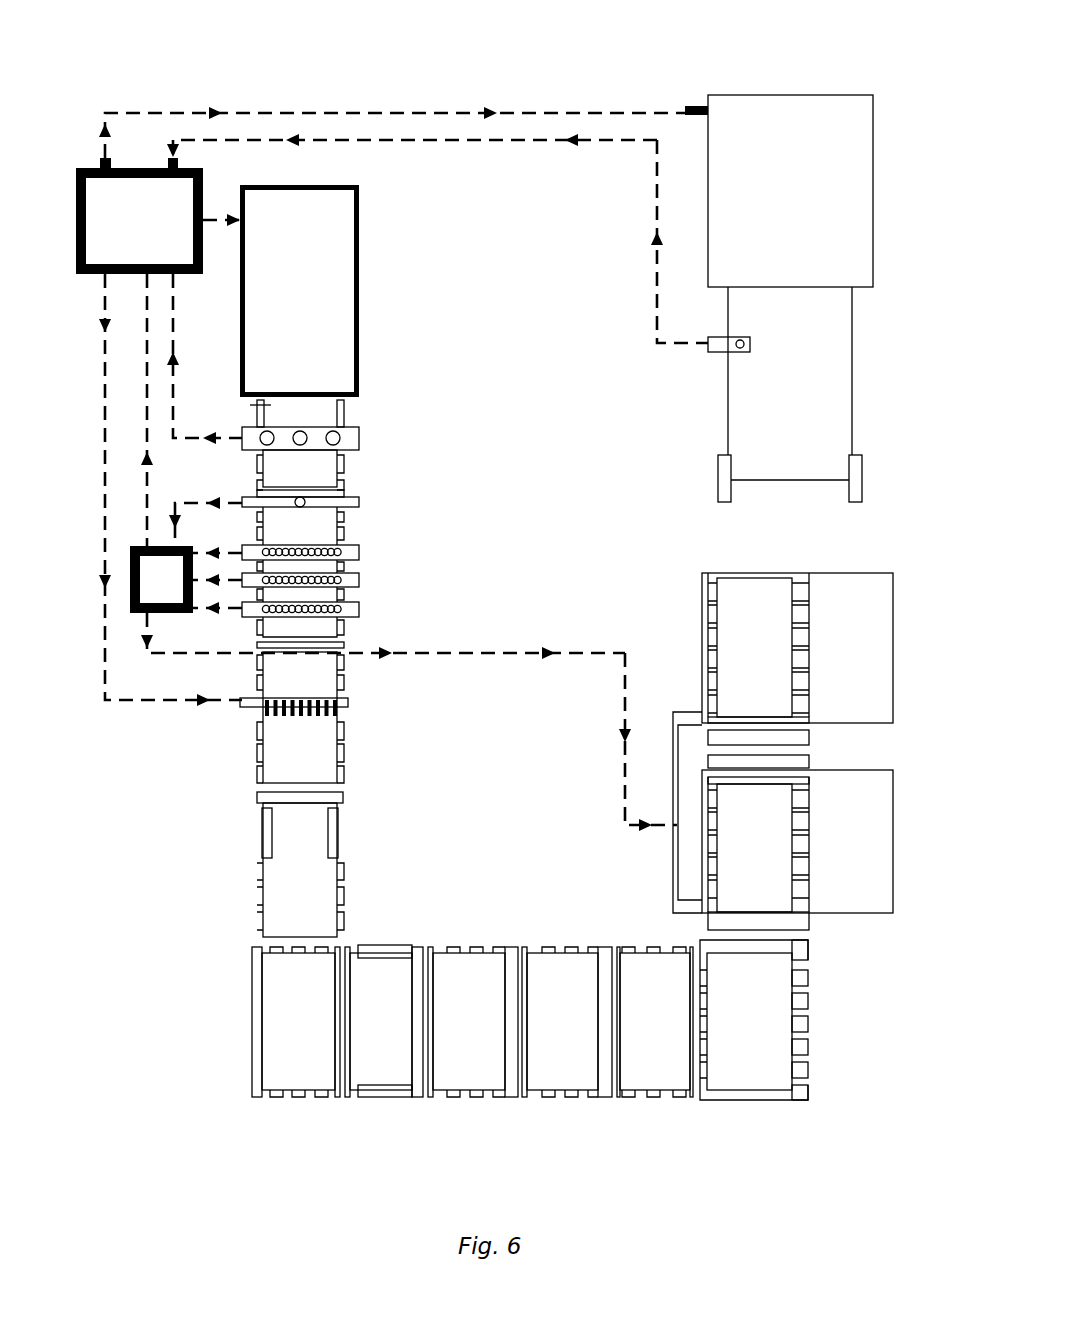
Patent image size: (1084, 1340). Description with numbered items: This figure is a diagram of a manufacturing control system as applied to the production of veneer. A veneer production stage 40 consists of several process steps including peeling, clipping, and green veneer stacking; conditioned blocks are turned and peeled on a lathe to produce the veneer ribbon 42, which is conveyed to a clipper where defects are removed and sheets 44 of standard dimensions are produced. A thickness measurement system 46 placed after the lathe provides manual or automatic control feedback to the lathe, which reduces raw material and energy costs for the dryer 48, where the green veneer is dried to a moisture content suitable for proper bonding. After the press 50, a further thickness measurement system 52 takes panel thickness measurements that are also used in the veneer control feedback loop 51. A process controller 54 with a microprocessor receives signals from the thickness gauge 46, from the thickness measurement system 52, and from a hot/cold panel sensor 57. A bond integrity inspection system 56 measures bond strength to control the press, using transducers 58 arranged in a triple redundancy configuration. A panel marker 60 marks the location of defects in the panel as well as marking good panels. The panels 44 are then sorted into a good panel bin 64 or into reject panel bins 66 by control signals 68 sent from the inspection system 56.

The veneer production stage 40 is at (556, 62).
The veneer ribbon 42 is at (830, 405).
The sheets 44 is at (273, 408).
The thickness measurement system 46 is at (722, 346).
The dryer 48 is at (843, 210).
The press 50 is at (340, 267).
The veneer control feedback loop 51 is at (410, 113).
The thickness measurement system 52 is at (359, 432).
The process controller 54 is at (103, 247).
The bond integrity inspection system 56 is at (345, 556).
The hot/cold panel sensor 57 is at (359, 502).
The transducers 58 is at (338, 549).
The panel marker 60 is at (350, 705).
The good panel bin 64 is at (857, 828).
The reject panel bins 66 is at (870, 630).
The control signals 68 is at (519, 652).